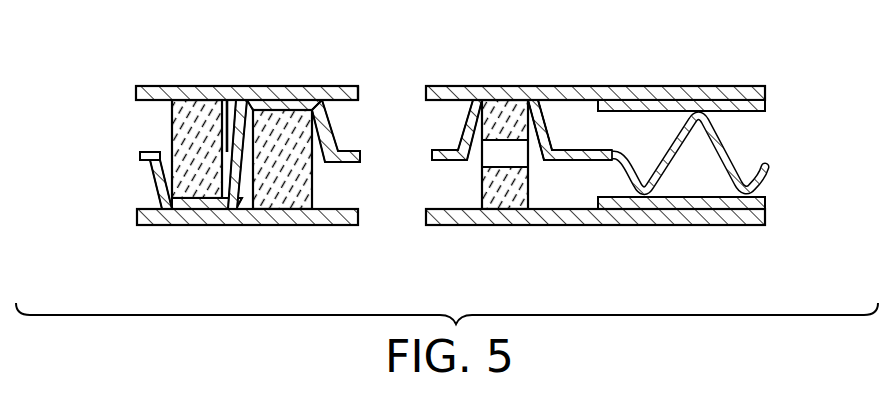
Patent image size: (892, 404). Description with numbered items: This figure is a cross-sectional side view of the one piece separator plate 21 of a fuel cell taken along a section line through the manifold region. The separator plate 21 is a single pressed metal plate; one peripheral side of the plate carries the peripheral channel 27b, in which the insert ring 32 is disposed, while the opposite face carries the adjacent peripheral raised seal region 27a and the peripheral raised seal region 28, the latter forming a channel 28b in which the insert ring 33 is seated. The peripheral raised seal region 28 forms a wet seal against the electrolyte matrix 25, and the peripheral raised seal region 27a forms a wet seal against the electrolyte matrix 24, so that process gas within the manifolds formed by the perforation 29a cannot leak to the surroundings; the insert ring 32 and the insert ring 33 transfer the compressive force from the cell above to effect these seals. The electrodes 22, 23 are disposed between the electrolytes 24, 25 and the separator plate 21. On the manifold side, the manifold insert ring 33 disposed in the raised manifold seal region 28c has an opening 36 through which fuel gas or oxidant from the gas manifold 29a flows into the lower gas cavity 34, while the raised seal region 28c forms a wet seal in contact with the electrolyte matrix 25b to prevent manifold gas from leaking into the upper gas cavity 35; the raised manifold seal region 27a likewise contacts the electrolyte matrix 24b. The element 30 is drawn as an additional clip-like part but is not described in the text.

The one piece separator plate 21 is at (602, 148).
The electrode 22 is at (770, 108).
The electrode 23 is at (768, 202).
The electrolyte matrix 24 is at (140, 226).
The electrolyte matrix 24b is at (672, 227).
The electrolyte matrix 25 is at (137, 90).
The electrolyte matrix 25b is at (647, 85).
The peripheral raised seal region 27a is at (203, 210).
The peripheral channel 27b is at (222, 100).
The peripheral raised seal region 28 is at (277, 100).
The channel 28b is at (317, 147).
The raised manifold seal region 28c is at (513, 100).
The gas manifold 29a is at (387, 108).
The clip 30 is at (147, 161).
The insert ring 32 is at (185, 105).
The manifold insert ring 33 is at (483, 100).
The lower gas cavity 34 is at (585, 192).
The upper gas cavity 35 is at (585, 133).
The opening 36 is at (502, 160).